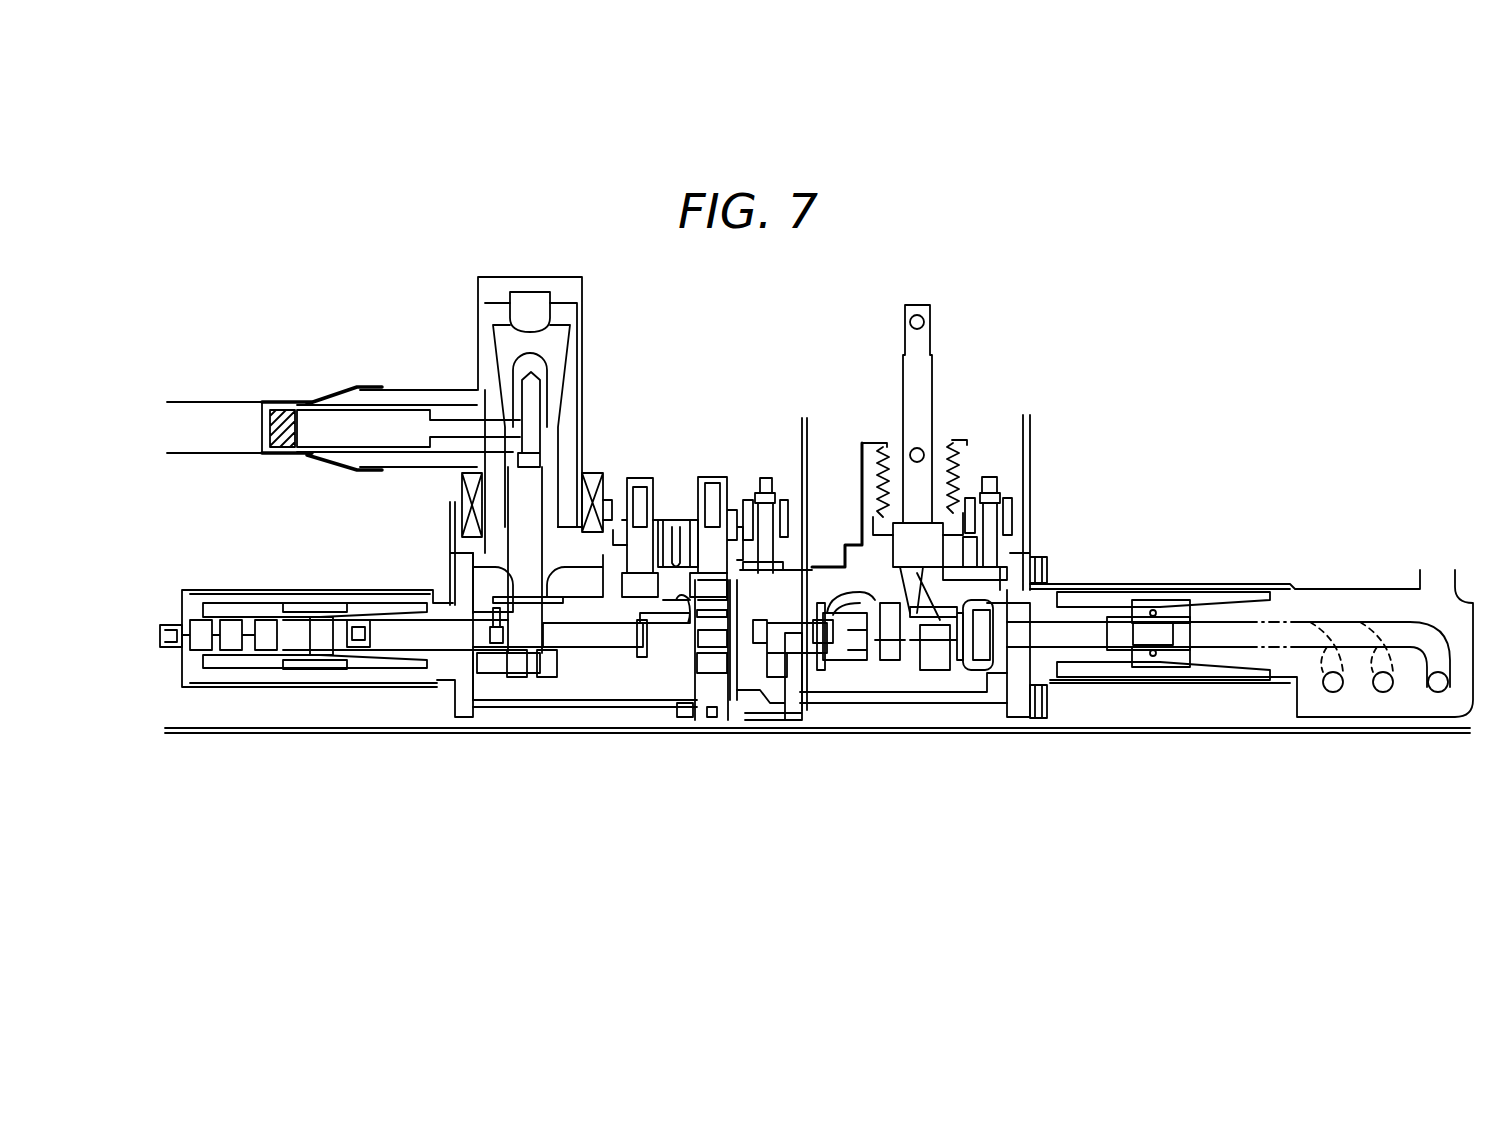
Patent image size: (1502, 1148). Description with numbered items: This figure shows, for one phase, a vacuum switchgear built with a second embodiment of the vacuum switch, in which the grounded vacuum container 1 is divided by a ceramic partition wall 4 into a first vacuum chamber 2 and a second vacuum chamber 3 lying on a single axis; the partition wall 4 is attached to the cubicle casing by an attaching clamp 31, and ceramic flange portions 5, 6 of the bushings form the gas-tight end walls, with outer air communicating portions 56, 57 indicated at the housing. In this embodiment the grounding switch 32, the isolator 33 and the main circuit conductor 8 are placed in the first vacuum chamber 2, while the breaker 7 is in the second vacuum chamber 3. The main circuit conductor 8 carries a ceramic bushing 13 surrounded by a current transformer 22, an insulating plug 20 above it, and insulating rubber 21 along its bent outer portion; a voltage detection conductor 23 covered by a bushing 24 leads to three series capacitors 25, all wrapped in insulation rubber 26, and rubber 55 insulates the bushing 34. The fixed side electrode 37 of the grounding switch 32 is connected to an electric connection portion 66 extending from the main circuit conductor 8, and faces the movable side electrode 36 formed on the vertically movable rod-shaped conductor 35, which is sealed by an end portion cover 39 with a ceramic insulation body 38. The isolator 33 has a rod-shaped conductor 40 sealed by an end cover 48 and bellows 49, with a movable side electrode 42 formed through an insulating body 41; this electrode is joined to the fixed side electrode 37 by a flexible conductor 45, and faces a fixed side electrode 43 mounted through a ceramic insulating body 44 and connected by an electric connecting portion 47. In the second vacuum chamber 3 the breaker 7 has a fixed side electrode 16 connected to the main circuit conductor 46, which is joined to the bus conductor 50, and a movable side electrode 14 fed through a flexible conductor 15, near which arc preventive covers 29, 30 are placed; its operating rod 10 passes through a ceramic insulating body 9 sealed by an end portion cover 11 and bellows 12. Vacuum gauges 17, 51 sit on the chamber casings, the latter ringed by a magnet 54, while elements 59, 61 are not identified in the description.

The vacuum container 1 is at (557, 708).
The first vacuum chamber 2 is at (687, 693).
The second vacuum chamber 3 is at (853, 677).
The partition wall 4 is at (795, 712).
The flange portion 5 is at (465, 708).
The flange portion 6 is at (1015, 710).
The breaker 7 is at (900, 647).
The main circuit conductor 8 is at (500, 427).
The insulating body 9 is at (923, 557).
The operating rod 10 is at (928, 357).
The end portion cover 11 is at (865, 445).
The bellows 12 is at (893, 447).
The bushing 13 is at (510, 480).
The movable side electrode 14 is at (953, 660).
The flexible conductor 15 is at (852, 590).
The fixed side electrode 16 is at (972, 653).
The vacuum gauge 17 is at (783, 513).
The insulating plug 20 is at (517, 340).
The rubber 21 is at (355, 466).
The current transformer 22 is at (593, 506).
The voltage detection conductor 23 is at (370, 637).
The bushing 24 is at (393, 655).
The capacitors 25 is at (267, 625).
The insulation rubber 26 is at (357, 600).
The arc preventive cover 29 is at (880, 663).
The arc preventive cover 30 is at (927, 650).
The attaching clamp 31 is at (787, 707).
The grounding switch 32 is at (655, 507).
The isolator 33 is at (733, 547).
The bushing 34 is at (1043, 663).
The rod-shaped conductor 35 is at (637, 540).
The movable side electrode 36 is at (603, 707).
The fixed side electrode 37 is at (793, 513).
The insulation body 38 is at (600, 513).
The end portion cover 39 is at (613, 520).
The rod-shaped conductor 40 is at (660, 527).
The insulating body 41 is at (745, 612).
The movable side electrode 42 is at (753, 647).
The fixed side electrode 43 is at (727, 633).
The insulating body 44 is at (705, 667).
The flexible conductor 45 is at (667, 640).
The main circuit conductor 46 is at (1083, 630).
The electric connecting portion 47 is at (742, 642).
The end cover 48 is at (756, 525).
The bellows 49 is at (703, 553).
The main circuit conductor 50 is at (1437, 692).
The vacuum gauge 51 is at (982, 463).
The magnet 54 is at (1007, 510).
The rubber 55 is at (1200, 667).
The outer air communicating portion 56 is at (1077, 717).
The outer air communicating portion 57 is at (408, 710).
The seal 59 is at (500, 650).
The gear 61 is at (840, 585).
The electric connection portion 66 is at (575, 627).